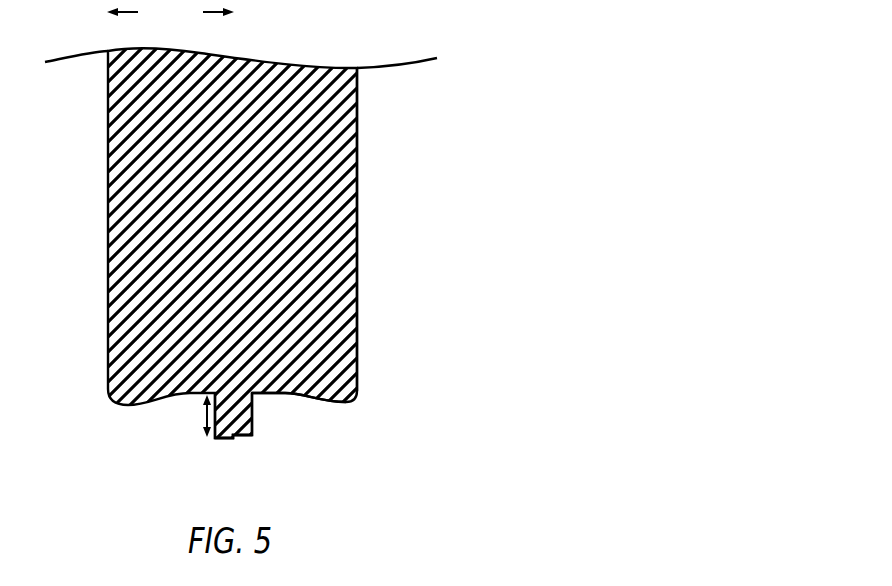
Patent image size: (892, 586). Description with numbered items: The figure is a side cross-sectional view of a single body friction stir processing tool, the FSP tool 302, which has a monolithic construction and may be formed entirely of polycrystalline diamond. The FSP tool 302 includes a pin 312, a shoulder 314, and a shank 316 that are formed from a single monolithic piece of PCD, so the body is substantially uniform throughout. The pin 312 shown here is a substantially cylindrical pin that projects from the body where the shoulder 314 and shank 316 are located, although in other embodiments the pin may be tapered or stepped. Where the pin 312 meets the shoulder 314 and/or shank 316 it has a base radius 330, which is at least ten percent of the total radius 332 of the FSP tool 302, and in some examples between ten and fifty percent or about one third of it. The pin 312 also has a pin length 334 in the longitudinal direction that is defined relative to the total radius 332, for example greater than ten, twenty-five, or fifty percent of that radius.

The FSP tool 302 is at (480, 106).
The shank 316 is at (357, 175).
The shoulder 314 is at (346, 402).
The pin 312 is at (253, 412).
The base radius 330 is at (226, 440).
The pin length 334 is at (200, 418).
The total radius 332 is at (170, 11).